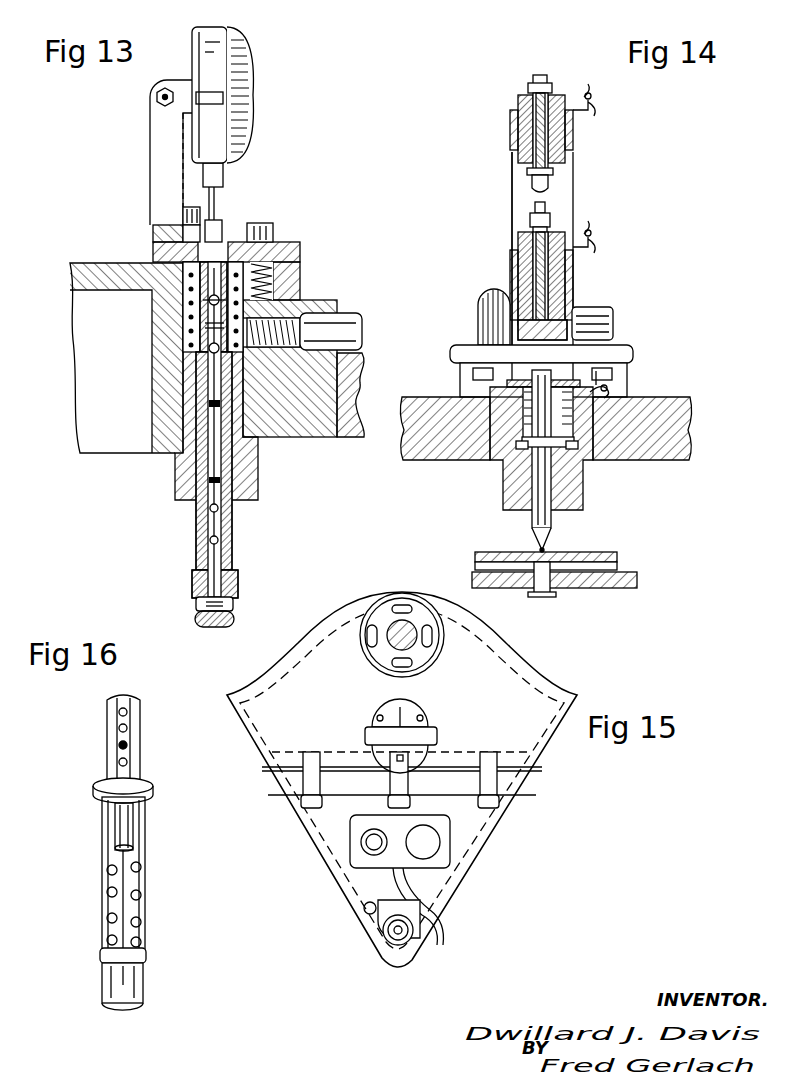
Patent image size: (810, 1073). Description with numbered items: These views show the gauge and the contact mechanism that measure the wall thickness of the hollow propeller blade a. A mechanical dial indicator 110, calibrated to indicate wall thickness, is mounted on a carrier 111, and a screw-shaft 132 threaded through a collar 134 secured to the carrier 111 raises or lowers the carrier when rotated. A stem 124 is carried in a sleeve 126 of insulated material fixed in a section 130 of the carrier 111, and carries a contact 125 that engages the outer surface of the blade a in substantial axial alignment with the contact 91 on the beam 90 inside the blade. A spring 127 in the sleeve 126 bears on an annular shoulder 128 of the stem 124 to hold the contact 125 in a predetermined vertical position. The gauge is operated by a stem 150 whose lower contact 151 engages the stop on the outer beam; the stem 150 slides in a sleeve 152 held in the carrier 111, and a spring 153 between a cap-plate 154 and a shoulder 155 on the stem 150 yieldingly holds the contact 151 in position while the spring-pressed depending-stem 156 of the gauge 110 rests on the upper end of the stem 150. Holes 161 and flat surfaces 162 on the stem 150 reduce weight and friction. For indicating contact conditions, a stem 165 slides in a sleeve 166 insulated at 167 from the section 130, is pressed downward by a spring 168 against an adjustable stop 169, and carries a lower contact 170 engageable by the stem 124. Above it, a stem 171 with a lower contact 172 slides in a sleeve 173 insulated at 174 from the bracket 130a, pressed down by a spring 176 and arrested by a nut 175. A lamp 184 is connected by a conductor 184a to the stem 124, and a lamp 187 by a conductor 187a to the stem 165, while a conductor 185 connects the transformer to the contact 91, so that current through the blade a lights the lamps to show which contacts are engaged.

In FIG. 13, the dial indicator 110 is at (224, 92).
In FIG. 15, the dial indicator 110 is at (430, 722).
In FIG. 13, the carrier 111 is at (168, 423).
In FIG. 15, the carrier 111 is at (277, 707).
In FIG. 13, the section 130 is at (328, 380).
In FIG. 14, the section 130 is at (643, 430).
In FIG. 15, the section 130 is at (327, 820).
In FIG. 14, the bracket 130a is at (528, 227).
In FIG. 15, the bracket 130a is at (387, 907).
In FIG. 13, the stem 150 is at (228, 548).
In FIG. 16, the stem 150 is at (110, 858).
In FIG. 13, the contact 151 is at (223, 618).
In FIG. 16, the contact 151 is at (123, 997).
In FIG. 13, the sleeve 152 is at (252, 478).
In FIG. 13, the spring 153 is at (236, 307).
In FIG. 13, the cap-plate 154 is at (272, 242).
In FIG. 13, the shoulder 155 is at (185, 355).
In FIG. 16, the shoulder 155 is at (147, 793).
In FIG. 13, the spring-pressed depending-stem 156 is at (222, 223).
In FIG. 13, the holes 161 is at (204, 551).
In FIG. 16, the holes 161 is at (138, 867).
In FIG. 16, the flat surfaces 162 is at (137, 828).
In FIG. 14, the nut 175 is at (545, 87).
In FIG. 15, the nut 175 is at (385, 940).
In FIG. 14, the insulation 174 is at (518, 117).
In FIG. 14, the sleeve 173 is at (510, 128).
In FIG. 14, the stem 171 is at (575, 130).
In FIG. 14, the conductor 185 is at (594, 110).
In FIG. 14, the spring 176 is at (548, 171).
In FIG. 14, the contact 172 is at (532, 184).
In FIG. 14, the adjustable stop 169 is at (552, 217).
In FIG. 14, the conductor 187a is at (596, 250).
In FIG. 14, the stem 165 is at (518, 262).
In FIG. 14, the sleeve 166 is at (572, 277).
In FIG. 14, the insulation 167 is at (575, 292).
In FIG. 14, the spring 168 is at (518, 328).
In FIG. 14, the lamp 187 is at (497, 311).
In FIG. 15, the lamp 187 is at (367, 848).
In FIG. 14, the lamp 184 is at (592, 318).
In FIG. 15, the lamp 184 is at (425, 843).
In FIG. 14, the contact 170 is at (603, 336).
In FIG. 14, the conductor 184a is at (607, 388).
In FIG. 14, the sleeve 126 is at (574, 493).
In FIG. 14, the stem 124 is at (541, 482).
In FIG. 14, the spring 127 is at (505, 462).
In FIG. 14, the annular shoulder 128 is at (533, 442).
In FIG. 14, the contact 125 is at (537, 548).
In FIG. 14, the contact 91 is at (560, 557).
In FIG. 14, the hollow blade a is at (605, 556).
In FIG. 14, the beam 90 is at (584, 586).
In FIG. 15, the screw-shaft 132 is at (390, 622).
In FIG. 15, the collar 134 is at (413, 653).